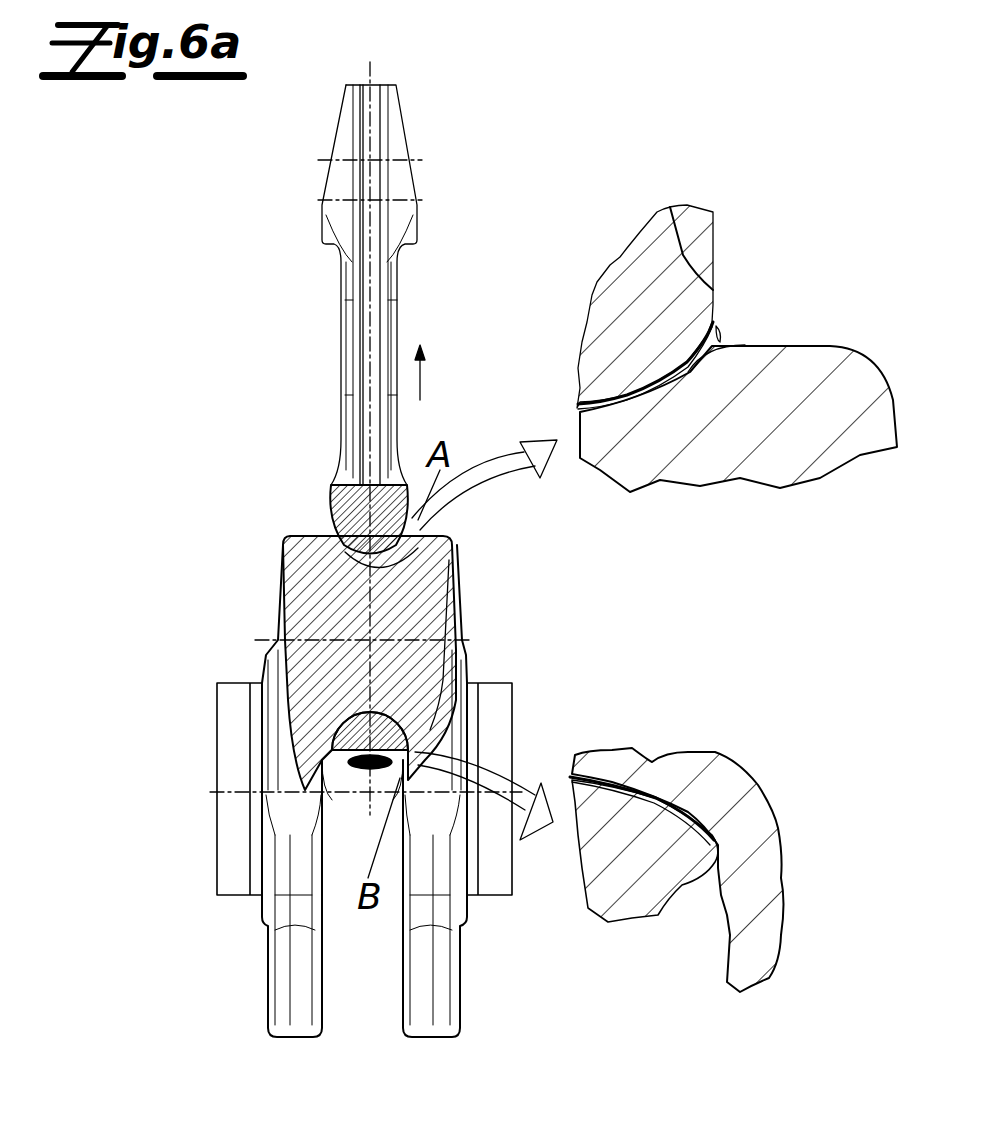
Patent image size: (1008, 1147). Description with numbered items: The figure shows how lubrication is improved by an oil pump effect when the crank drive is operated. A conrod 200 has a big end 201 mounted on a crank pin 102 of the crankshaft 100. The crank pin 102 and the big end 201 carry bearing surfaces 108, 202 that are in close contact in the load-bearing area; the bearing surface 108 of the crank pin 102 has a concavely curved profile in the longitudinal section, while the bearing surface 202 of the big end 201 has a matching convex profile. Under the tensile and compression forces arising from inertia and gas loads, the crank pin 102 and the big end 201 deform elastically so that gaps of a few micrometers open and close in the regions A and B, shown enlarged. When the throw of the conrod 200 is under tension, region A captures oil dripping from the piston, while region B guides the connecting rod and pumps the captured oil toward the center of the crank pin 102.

The crankshaft 100 is at (250, 630).
The crank pin 102 is at (440, 592).
The bearing surface of the crank pin 108 is at (740, 345).
The conrod 200 is at (305, 292).
The big end 201 is at (620, 257).
The bearing surface of the big end 202 is at (720, 308).